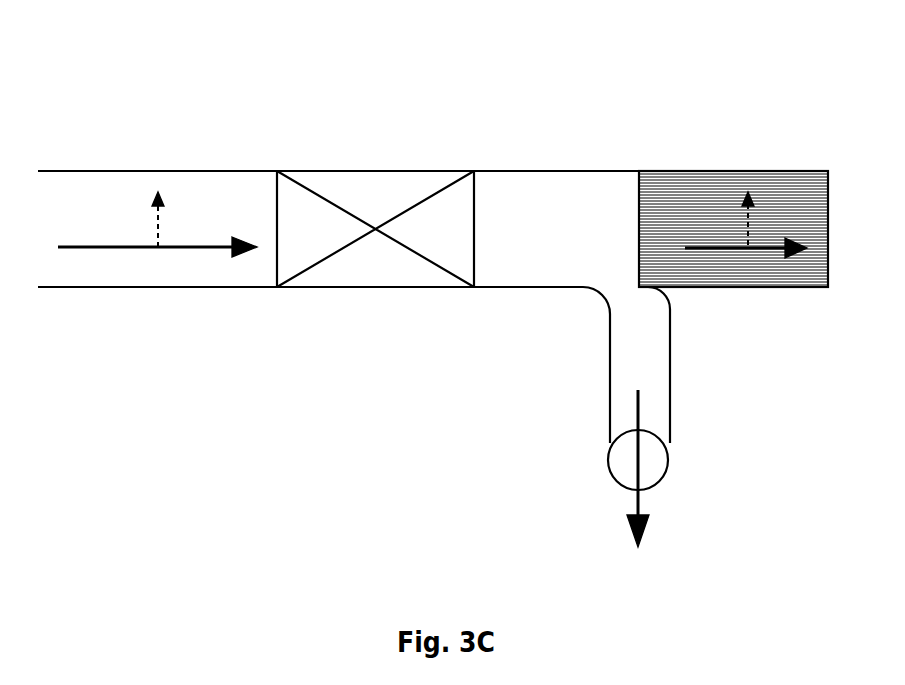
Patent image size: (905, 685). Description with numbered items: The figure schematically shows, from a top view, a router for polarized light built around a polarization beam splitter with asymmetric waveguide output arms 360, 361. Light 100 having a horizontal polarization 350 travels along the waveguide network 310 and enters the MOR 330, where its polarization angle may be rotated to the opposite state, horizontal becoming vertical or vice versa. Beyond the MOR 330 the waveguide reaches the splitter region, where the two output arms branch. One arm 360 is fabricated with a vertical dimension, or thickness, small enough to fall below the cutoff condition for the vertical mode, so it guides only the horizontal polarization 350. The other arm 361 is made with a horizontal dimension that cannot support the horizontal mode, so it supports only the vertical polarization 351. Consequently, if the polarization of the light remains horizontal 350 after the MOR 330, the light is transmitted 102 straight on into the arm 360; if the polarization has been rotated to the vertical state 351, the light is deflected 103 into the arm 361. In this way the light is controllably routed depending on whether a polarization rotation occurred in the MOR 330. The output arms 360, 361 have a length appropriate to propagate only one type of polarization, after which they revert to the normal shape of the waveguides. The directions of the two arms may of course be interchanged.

The light 100 is at (198, 287).
The transmitted light 102 is at (720, 257).
The deflected light 103 is at (648, 500).
The waveguide network 310 is at (78, 305).
The MOR 330 is at (335, 305).
The horizontal polarization 350 is at (140, 228).
The vertical polarization 351 is at (602, 470).
The waveguide output arm 360 is at (767, 162).
The waveguide output arm 361 is at (688, 403).